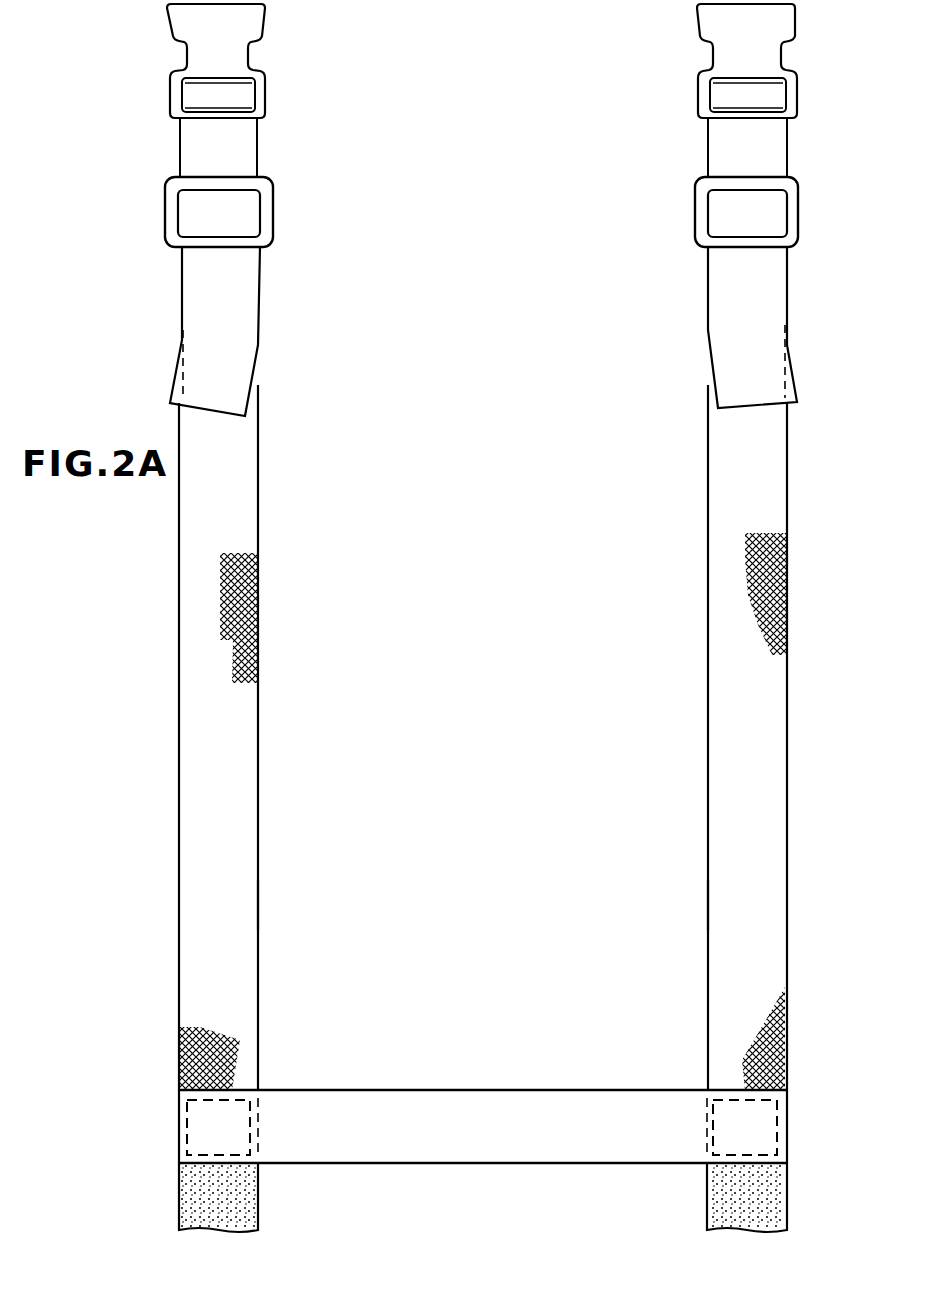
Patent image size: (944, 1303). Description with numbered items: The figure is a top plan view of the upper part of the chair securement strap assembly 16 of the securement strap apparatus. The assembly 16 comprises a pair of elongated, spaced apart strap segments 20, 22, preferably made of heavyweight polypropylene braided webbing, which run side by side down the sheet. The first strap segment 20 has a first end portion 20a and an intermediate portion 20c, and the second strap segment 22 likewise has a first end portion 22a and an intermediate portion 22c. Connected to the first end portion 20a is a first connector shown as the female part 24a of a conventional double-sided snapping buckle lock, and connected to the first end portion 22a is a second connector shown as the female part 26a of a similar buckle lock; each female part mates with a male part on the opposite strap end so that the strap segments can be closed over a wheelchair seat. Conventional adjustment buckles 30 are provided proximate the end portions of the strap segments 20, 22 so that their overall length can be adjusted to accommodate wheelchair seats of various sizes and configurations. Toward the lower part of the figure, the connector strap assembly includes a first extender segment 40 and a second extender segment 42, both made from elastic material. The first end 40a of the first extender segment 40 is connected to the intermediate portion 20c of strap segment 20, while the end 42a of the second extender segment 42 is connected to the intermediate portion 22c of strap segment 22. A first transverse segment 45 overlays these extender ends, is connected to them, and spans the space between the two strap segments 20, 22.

The chair securement strap assembly 16 is at (168, 503).
The first strap segment 20 is at (260, 577).
The first end portion of first strap segment 20a is at (260, 315).
The intermediate portion of first strap segment 20c is at (250, 903).
The second strap segment 22 is at (705, 569).
The first end portion of second strap segment 22a is at (708, 322).
The intermediate portion of second strap segment 22c is at (720, 910).
The female part of first connector 24a is at (243, 57).
The female part of second connector 26a is at (720, 62).
The adjustment buckle 30 is at (265, 208).
The first extender segment 40 is at (193, 1200).
The first end of first extender segment 40a is at (213, 1132).
The second extender segment 42 is at (767, 1198).
The end of second extender segment 42a is at (755, 1127).
The first transverse segment 45 is at (457, 1103).